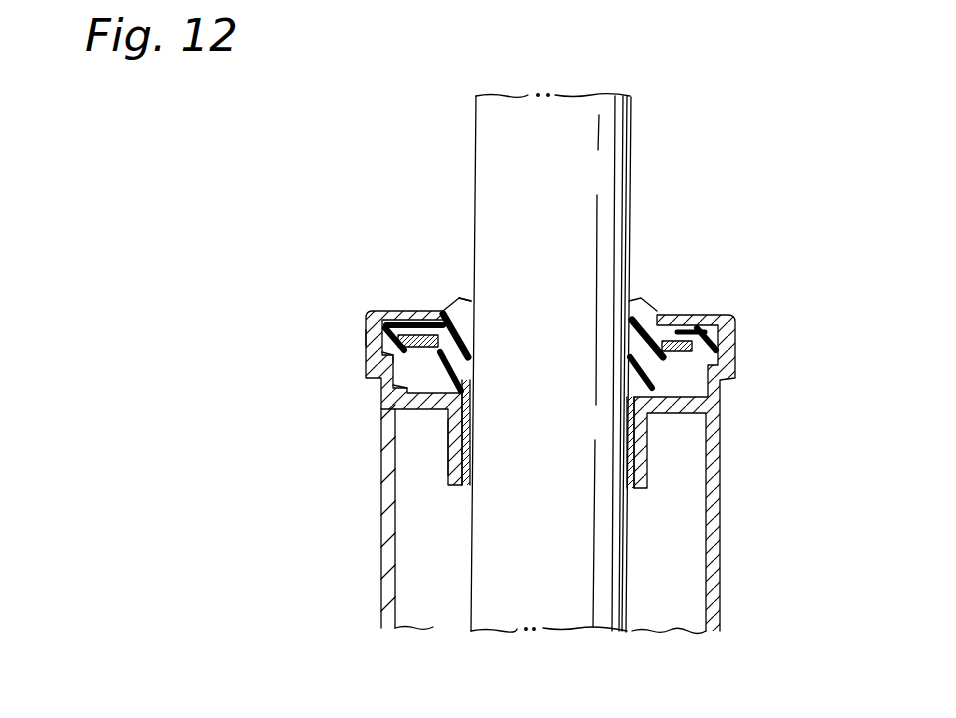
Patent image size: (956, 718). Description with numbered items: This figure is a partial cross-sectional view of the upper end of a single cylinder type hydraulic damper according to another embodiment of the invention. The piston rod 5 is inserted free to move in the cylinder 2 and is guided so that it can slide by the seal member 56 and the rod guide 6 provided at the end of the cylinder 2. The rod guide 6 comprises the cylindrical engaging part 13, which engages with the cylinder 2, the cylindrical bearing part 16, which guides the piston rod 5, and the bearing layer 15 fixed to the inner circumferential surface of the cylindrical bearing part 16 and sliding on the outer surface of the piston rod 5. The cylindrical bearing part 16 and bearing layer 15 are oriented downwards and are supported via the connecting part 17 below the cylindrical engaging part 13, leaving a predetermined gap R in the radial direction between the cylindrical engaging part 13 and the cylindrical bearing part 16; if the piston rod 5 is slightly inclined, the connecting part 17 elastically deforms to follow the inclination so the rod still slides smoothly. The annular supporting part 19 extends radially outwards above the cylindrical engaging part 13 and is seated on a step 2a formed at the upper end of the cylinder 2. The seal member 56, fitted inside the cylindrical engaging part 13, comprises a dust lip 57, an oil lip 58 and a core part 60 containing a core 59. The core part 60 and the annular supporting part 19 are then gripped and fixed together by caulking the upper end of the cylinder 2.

The cylinder 2 is at (388, 572).
The step 2a is at (383, 355).
The piston rod 5 is at (606, 145).
The rod guide 6 is at (434, 420).
The cylindrical engaging part 13 is at (392, 388).
The bearing layer 15 is at (470, 422).
The cylindrical bearing part 16 is at (470, 449).
The connecting part 17 is at (410, 397).
The annular supporting part 19 is at (366, 338).
The seal member 56 is at (428, 311).
The dust lip 57 is at (472, 308).
The oil lip 58 is at (472, 355).
The core 59 is at (406, 322).
The core part 60 is at (385, 320).
The gap R is at (675, 527).